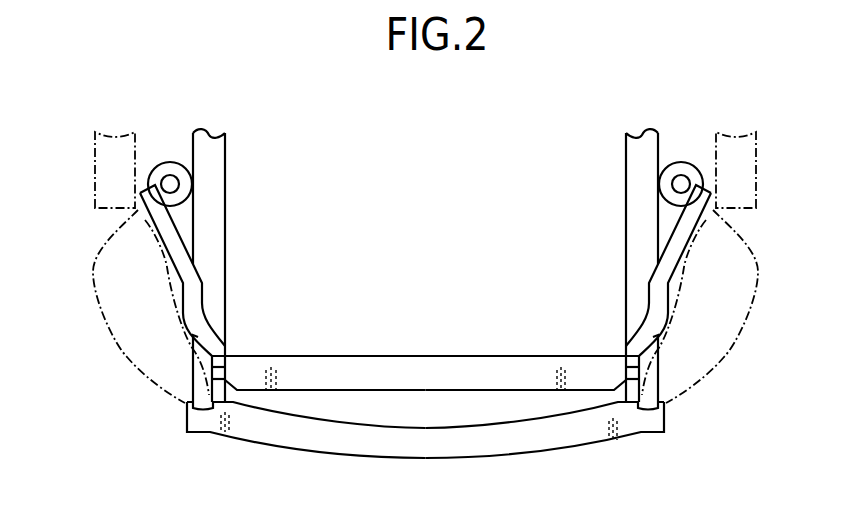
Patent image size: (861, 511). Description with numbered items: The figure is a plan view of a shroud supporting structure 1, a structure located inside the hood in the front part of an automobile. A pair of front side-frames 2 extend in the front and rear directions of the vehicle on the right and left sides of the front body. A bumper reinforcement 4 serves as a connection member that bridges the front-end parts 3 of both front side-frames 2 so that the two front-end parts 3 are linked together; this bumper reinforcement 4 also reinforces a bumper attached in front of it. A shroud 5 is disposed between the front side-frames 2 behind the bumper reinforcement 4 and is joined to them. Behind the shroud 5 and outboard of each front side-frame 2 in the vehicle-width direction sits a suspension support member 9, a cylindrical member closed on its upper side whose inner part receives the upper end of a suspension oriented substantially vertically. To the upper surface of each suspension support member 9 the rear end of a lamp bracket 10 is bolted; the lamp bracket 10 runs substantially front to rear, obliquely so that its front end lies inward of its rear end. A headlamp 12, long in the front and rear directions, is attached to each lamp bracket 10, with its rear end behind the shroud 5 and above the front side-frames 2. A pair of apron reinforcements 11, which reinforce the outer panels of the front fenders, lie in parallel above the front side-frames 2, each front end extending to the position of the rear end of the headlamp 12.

The shroud supporting structure 1 is at (526, 140).
The front side-frame 2 is at (227, 233).
The front-end part 3 is at (203, 392).
The bumper reinforcement 4 is at (443, 458).
The shroud 5 is at (413, 357).
The suspension support member 9 is at (178, 162).
The lamp bracket 10 is at (157, 240).
The apron reinforcement 11 is at (95, 178).
The headlamp 12 is at (123, 352).